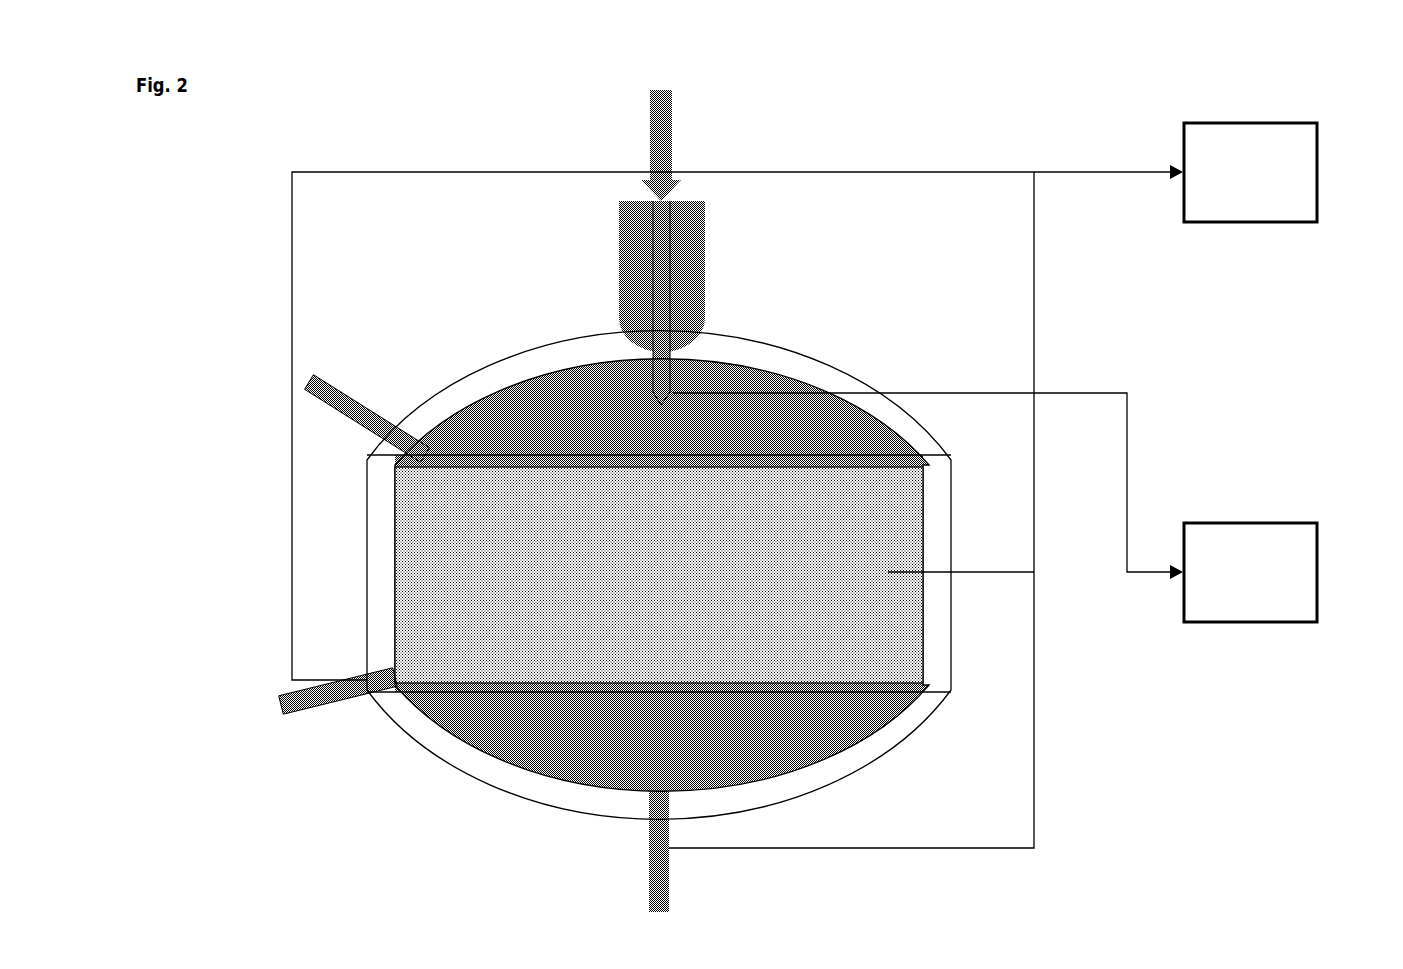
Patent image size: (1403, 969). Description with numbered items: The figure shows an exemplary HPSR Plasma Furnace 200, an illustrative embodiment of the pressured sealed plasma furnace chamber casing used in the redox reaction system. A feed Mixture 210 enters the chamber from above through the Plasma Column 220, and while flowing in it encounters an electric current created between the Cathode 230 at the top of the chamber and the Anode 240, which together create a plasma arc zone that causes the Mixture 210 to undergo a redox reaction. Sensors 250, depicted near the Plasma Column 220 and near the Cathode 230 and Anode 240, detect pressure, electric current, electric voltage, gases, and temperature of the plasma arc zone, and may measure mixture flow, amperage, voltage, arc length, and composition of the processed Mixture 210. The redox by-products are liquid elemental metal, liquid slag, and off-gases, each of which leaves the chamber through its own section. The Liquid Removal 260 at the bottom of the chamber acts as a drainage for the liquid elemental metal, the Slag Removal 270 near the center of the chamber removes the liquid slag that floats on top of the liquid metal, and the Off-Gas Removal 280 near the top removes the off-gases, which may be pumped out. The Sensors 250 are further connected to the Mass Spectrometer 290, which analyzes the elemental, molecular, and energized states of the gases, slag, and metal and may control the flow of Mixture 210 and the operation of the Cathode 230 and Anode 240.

The plasma furnace 200 is at (705, 416).
The mixture 210 is at (650, 112).
The plasma column 220 is at (660, 398).
The cathode 230 is at (619, 320).
The anode 240 is at (937, 720).
The sensors 250 is at (1250, 623).
The liquid removal 260 is at (660, 908).
The slag removal 270 is at (281, 698).
The off-gas removal 280 is at (307, 382).
The mass spectrometer 290 is at (1250, 223).